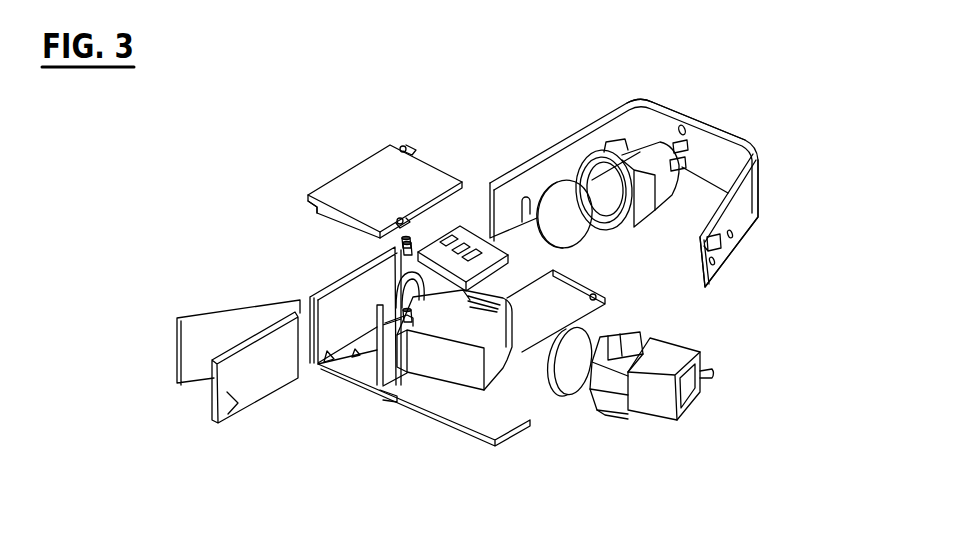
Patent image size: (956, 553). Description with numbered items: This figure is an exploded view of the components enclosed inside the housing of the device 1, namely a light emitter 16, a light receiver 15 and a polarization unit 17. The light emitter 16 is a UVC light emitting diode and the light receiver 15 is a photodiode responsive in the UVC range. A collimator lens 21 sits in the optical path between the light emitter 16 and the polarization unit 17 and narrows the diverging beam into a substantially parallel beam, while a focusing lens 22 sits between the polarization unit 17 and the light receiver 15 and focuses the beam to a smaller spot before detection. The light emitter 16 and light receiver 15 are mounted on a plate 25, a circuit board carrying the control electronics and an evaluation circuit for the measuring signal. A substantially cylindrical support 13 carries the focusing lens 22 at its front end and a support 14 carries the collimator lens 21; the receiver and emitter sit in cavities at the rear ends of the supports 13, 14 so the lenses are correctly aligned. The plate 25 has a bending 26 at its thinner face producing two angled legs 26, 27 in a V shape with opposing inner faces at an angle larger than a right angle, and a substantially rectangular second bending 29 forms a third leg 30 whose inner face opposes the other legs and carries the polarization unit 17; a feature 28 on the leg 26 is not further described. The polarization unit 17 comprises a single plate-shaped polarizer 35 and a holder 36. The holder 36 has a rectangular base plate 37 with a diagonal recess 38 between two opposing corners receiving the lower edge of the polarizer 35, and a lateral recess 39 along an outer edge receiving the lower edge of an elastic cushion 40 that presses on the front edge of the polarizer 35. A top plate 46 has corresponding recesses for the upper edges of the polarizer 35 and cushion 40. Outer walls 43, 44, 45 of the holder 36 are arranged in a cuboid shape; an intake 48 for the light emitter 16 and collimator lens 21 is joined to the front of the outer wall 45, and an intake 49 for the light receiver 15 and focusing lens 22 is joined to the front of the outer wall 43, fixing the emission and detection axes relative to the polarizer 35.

The lighting module assembly 1 is at (186, 163).
The support 13 is at (635, 168).
The support 14 is at (603, 412).
The light receiver 15 is at (686, 150).
The light emitter 16 is at (721, 250).
The polarization unit 17 is at (353, 416).
The collimator lens 21 is at (558, 397).
The focusing lens 22 is at (561, 176).
The plate 25 is at (722, 156).
The angled leg 26 is at (760, 185).
The angled leg 27 is at (708, 120).
The mounting holes 28 is at (722, 224).
The second bending 29 is at (633, 98).
The third leg 30 is at (570, 130).
The polarizer 35 is at (192, 358).
The holder 36 is at (395, 401).
The base plate 37 is at (372, 390).
The diagonal recess 38 is at (354, 356).
The lateral recess 39 is at (318, 364).
The cushion 40 is at (229, 417).
The outer wall 43 is at (383, 305).
The outer wall 44 is at (317, 298).
The outer wall 45 is at (318, 203).
The top plate 46 is at (396, 188).
The intake 48 is at (479, 278).
The intake 49 is at (457, 376).